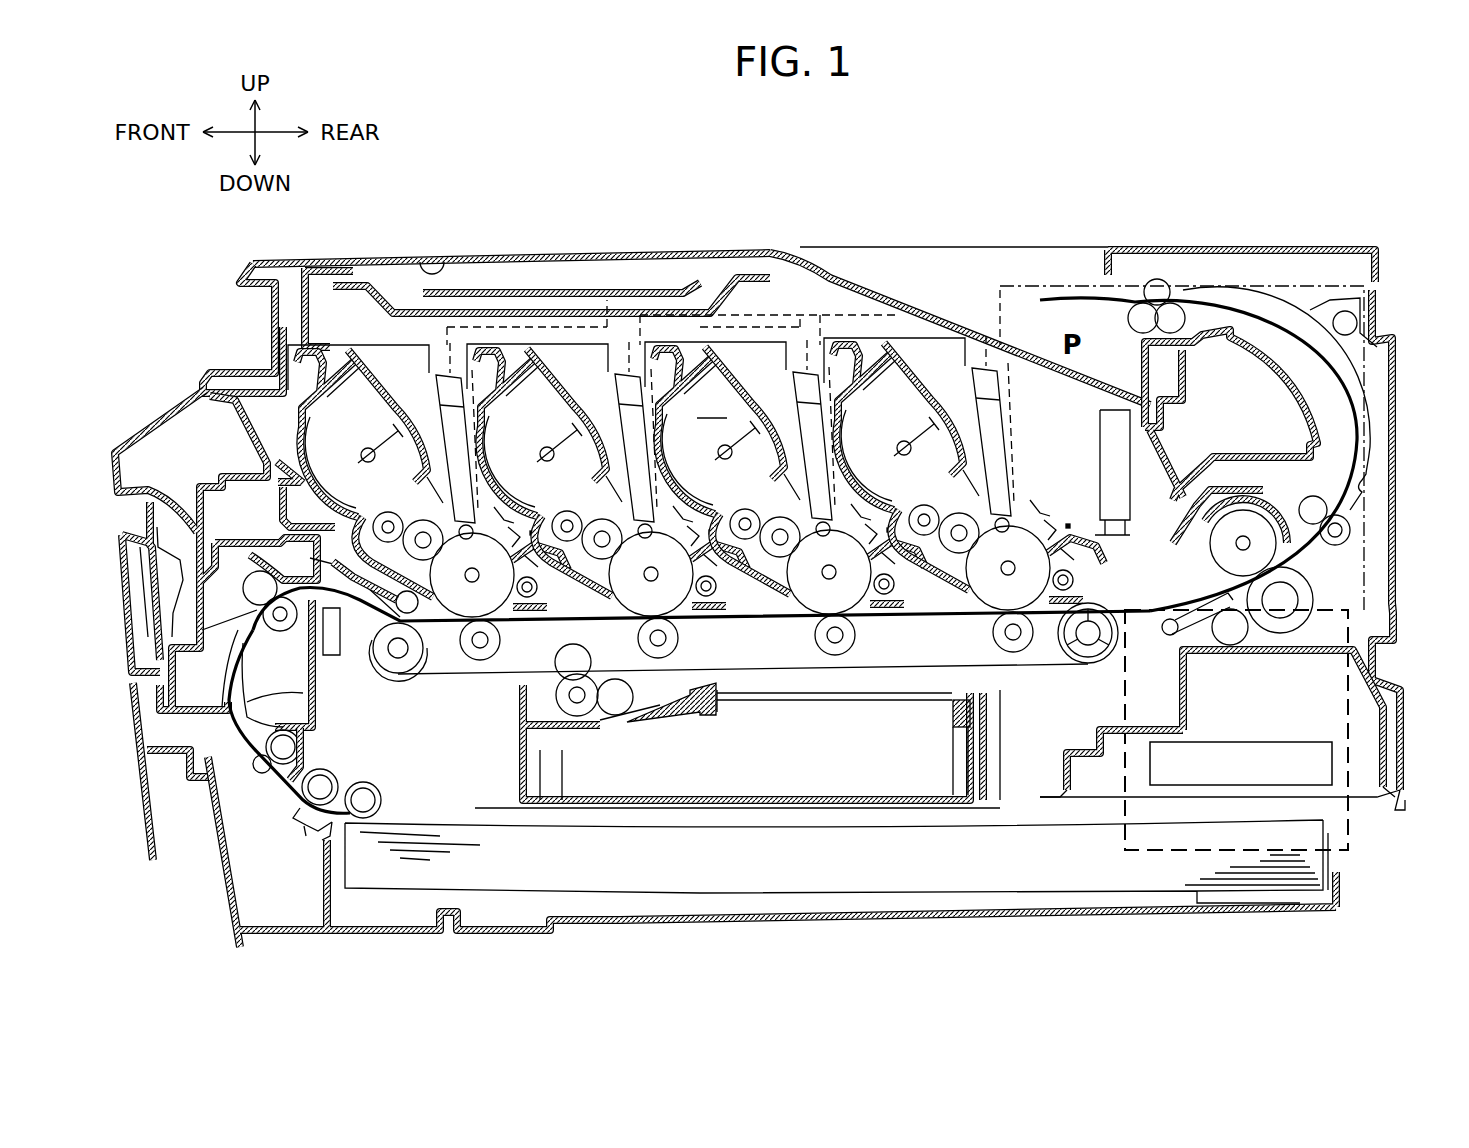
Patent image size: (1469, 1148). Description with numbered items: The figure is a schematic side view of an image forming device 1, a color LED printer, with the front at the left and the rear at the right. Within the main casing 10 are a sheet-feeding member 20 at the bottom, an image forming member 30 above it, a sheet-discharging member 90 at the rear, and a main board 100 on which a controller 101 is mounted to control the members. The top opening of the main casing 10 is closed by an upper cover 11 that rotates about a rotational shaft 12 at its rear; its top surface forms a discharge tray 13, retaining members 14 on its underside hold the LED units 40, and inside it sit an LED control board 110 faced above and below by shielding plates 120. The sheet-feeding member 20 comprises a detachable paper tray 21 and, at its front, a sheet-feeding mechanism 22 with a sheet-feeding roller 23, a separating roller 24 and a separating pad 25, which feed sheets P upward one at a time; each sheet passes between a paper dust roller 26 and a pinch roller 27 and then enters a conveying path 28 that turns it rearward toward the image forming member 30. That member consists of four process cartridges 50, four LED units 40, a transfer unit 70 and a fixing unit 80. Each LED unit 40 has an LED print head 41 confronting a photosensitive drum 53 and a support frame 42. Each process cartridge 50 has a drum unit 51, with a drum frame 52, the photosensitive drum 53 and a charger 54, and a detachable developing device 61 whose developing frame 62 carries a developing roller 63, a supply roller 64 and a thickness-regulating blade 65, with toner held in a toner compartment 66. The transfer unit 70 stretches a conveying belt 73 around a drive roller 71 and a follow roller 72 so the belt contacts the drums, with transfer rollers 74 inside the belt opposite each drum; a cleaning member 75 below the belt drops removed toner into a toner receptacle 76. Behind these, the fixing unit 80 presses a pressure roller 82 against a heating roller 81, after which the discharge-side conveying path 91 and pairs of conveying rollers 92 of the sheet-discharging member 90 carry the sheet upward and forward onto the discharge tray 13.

The image forming device 1 is at (1112, 135).
The main casing 10 is at (1400, 385).
The upper cover 11 is at (690, 250).
The rotational shaft 12 is at (1358, 321).
The discharge tray 13 is at (863, 292).
The retaining members 14 is at (453, 372).
The sheet-feeding member 20 is at (722, 858).
The paper tray 21 is at (217, 880).
The sheet-feeding mechanism 22 is at (326, 756).
The sheet-feeding roller 23 is at (382, 795).
The separating roller 24 is at (335, 780).
The separating pad 25 is at (302, 826).
The paper dust roller 26 is at (300, 745).
The pinch roller 27 is at (256, 760).
The conveying path 28 is at (243, 702).
The image forming member 30 is at (270, 400).
The LED units 40 is at (428, 430).
The LED print head 41 is at (1022, 483).
The support frame 42 is at (1000, 445).
The process cartridges 50 is at (362, 348).
The drum unit 51 is at (1012, 682).
The drum frame 52 is at (1108, 575).
The photosensitive drum 53 is at (460, 603).
The charger 54 is at (1058, 512).
The developing device 61 is at (701, 662).
The developing frame 62 is at (995, 432).
The developing roller 63 is at (777, 607).
The supply roller 64 is at (745, 600).
The thickness-regulating blade 65 is at (773, 503).
The toner compartment 66 is at (712, 404).
The transfer unit 70 is at (749, 722).
The drive roller 71 is at (1098, 650).
The follow roller 72 is at (388, 680).
The conveying belt 73 is at (428, 678).
The transfer rollers 74 is at (500, 645).
The cleaning member 75 is at (540, 708).
The toner receptacle 76 is at (522, 780).
The fixing unit 80 is at (1308, 603).
The heating roller 81 is at (1268, 546).
The pressure roller 82 is at (1307, 593).
The sheet-discharging member 90 is at (1237, 403).
The discharge-side conveying path 91 is at (1368, 474).
The conveying rollers 92 is at (1158, 280).
The main board 100 is at (1254, 730).
The controller 101 is at (1335, 770).
The LED control board 110 is at (522, 290).
The shielding plates 120 is at (398, 300).